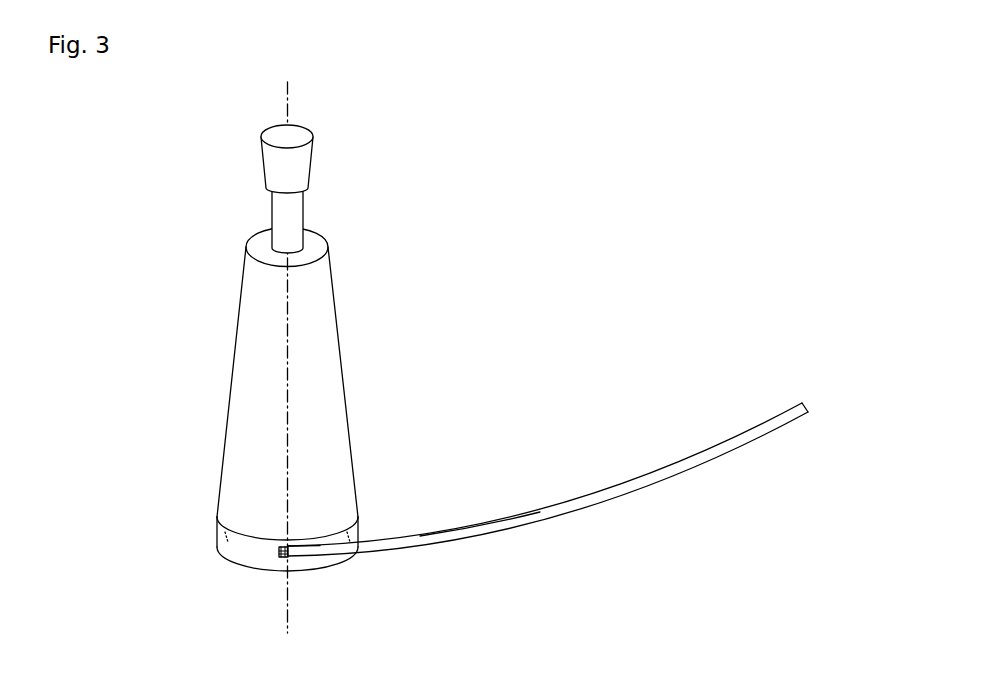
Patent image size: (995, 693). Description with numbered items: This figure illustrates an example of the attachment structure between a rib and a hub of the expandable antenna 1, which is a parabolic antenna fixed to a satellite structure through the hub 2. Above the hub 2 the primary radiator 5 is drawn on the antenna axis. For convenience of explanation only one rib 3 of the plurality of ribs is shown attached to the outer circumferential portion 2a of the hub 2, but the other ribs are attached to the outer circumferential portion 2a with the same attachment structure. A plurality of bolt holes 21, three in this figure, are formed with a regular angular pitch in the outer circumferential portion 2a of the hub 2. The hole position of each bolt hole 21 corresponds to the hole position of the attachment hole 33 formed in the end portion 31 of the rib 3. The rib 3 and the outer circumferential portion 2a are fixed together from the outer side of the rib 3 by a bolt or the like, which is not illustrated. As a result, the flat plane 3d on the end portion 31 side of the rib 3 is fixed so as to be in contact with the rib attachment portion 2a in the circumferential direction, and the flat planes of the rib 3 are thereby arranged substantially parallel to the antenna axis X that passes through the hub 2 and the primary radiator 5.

The expandable antenna 1 is at (507, 190).
The hub 2 is at (328, 328).
The outer circumferential portion of the hub 2a is at (217, 520).
The rib 3 is at (788, 418).
The flat plane of the rib 3d is at (487, 522).
The primary radiator 5 is at (310, 158).
The bolt hole 21 is at (357, 534).
The end portion of the rib 31 is at (292, 543).
The attachment hole 33 is at (292, 560).